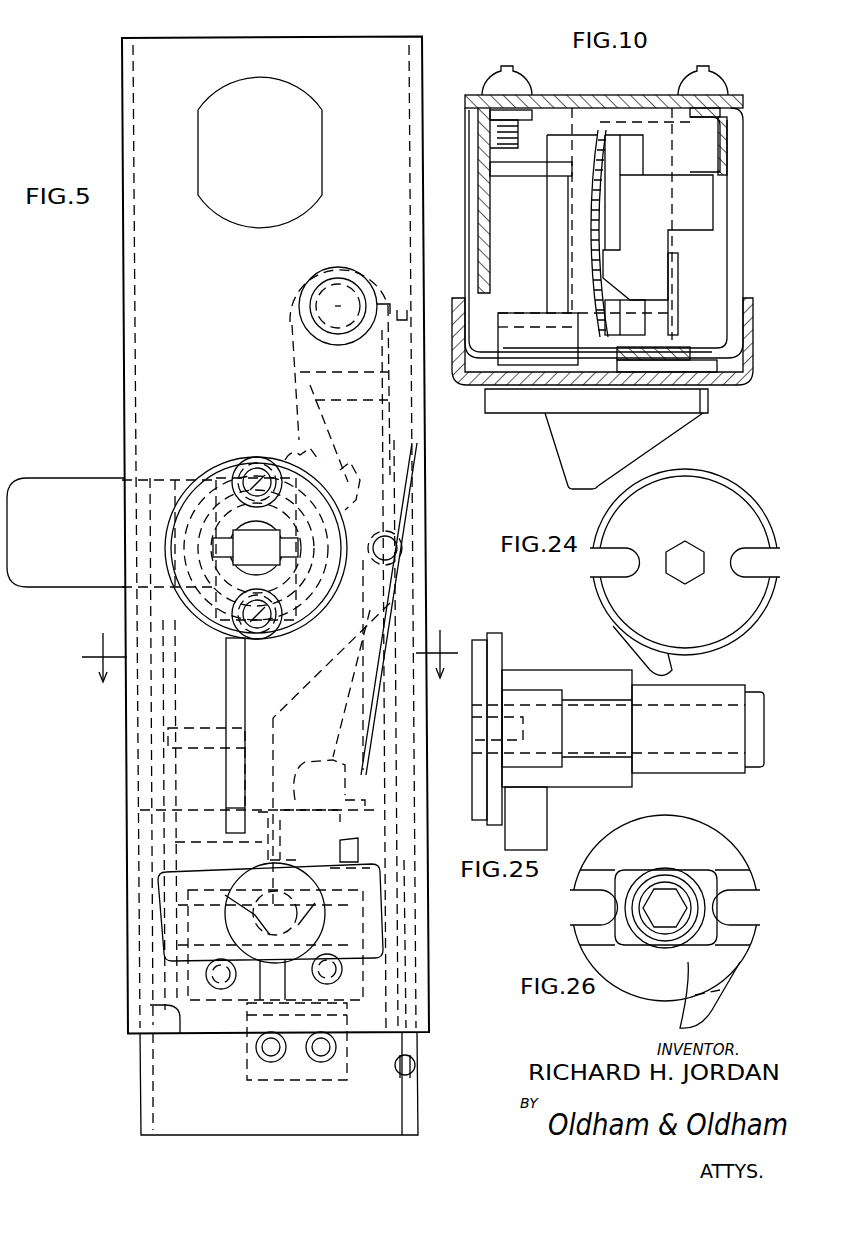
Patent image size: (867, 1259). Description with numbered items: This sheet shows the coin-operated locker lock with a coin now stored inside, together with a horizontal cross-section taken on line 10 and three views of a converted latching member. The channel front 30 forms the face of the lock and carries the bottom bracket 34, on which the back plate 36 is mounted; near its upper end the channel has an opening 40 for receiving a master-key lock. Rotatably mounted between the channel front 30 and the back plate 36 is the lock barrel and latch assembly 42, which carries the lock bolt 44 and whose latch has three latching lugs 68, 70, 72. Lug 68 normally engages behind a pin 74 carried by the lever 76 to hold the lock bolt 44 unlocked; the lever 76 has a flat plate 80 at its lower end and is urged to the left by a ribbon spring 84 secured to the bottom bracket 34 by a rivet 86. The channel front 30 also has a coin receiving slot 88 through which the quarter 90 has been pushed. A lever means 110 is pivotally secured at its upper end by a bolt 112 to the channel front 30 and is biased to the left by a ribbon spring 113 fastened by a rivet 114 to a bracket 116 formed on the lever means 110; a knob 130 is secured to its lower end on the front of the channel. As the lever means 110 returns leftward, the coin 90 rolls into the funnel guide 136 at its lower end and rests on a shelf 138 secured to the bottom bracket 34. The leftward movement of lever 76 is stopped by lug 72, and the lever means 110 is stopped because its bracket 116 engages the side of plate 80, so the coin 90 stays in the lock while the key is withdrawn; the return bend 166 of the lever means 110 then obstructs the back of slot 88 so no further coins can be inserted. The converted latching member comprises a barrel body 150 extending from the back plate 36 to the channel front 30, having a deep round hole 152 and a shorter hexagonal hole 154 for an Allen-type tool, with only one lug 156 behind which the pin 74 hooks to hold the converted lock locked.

In FIG. 5, the section line 10 is at (270, 646).
In FIG. 5, the channel front 30 is at (150, 232).
In FIG. 10, the channel front 30 is at (738, 382).
In FIG. 5, the bottom bracket 34 is at (268, 1137).
In FIG. 10, the back plate 36 is at (618, 98).
In FIG. 5, the opening 40 is at (198, 131).
In FIG. 5, the lock barrel and latch assembly 42 is at (206, 478).
In FIG. 5, the lock bolt 44 is at (72, 490).
In FIG. 5, the latching lug 68 is at (290, 445).
In FIG. 5, the latching lug 70 is at (345, 478).
In FIG. 5, the latching lug 72 is at (318, 630).
In FIG. 5, the pin 74 is at (400, 540).
In FIG. 5, the lever 76 is at (362, 696).
In FIG. 10, the flat plate 80 is at (700, 210).
In FIG. 5, the ribbon spring 84 is at (410, 862).
In FIG. 5, the rivet 86 is at (418, 1068).
In FIG. 5, the coin receiving slot 88 is at (232, 660).
In FIG. 5, the quarter (coin) 90 is at (276, 835).
In FIG. 10, the quarter (coin) 90 is at (608, 228).
In FIG. 5, the lever means 110 is at (305, 392).
In FIG. 5, the bolt 112 is at (340, 292).
In FIG. 5, the ribbon spring 113 is at (410, 492).
In FIG. 5, the rivet 114 is at (335, 853).
In FIG. 5, the bracket 116 is at (345, 786).
In FIG. 10, the bracket 116 is at (680, 286).
In FIG. 5, the knob 130 is at (372, 918).
In FIG. 10, the knob 130 is at (556, 436).
In FIG. 5, the funnel guide 136 is at (240, 928).
In FIG. 10, the funnel guide 136 is at (558, 266).
In FIG. 5, the shelf 138 is at (340, 993).
In FIG. 24, the barrel body 150 is at (742, 478).
In FIG. 25, the barrel body 150 is at (558, 664).
In FIG. 26, the barrel body 150 is at (714, 829).
In FIG. 25, the deep round hole 152 is at (716, 706).
In FIG. 26, the deep round hole 152 is at (658, 926).
In FIG. 24, the hexagonal hole 154 is at (692, 548).
In FIG. 25, the hexagonal hole 154 is at (480, 710).
In FIG. 26, the hexagonal hole 154 is at (668, 884).
In FIG. 24, the lug 156 is at (664, 668).
In FIG. 25, the lug 156 is at (540, 820).
In FIG. 26, the lug 156 is at (712, 1008).
In FIG. 5, the return bend 166 is at (198, 727).